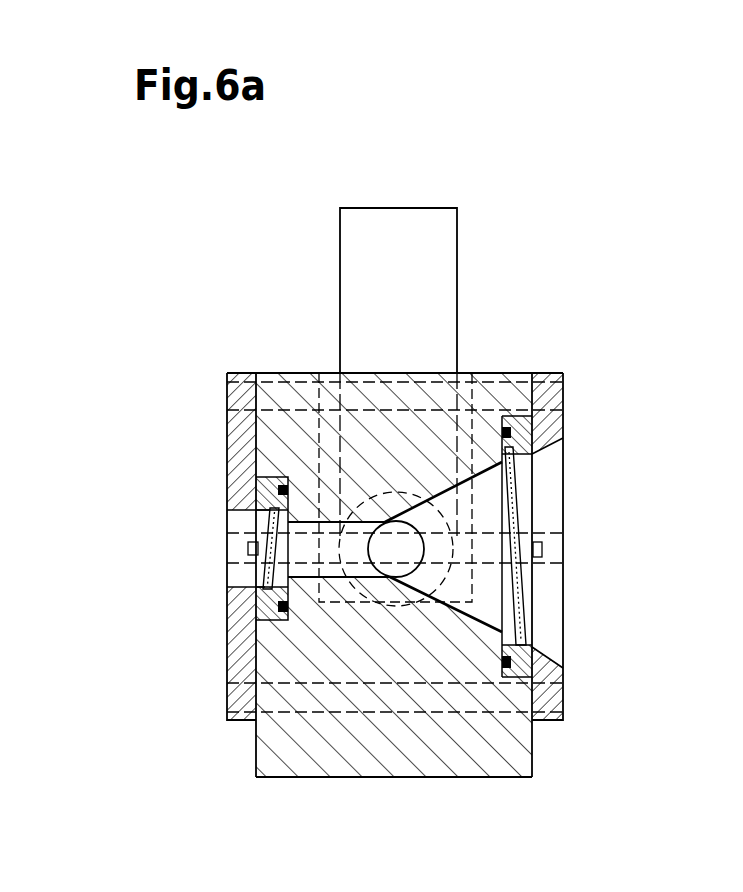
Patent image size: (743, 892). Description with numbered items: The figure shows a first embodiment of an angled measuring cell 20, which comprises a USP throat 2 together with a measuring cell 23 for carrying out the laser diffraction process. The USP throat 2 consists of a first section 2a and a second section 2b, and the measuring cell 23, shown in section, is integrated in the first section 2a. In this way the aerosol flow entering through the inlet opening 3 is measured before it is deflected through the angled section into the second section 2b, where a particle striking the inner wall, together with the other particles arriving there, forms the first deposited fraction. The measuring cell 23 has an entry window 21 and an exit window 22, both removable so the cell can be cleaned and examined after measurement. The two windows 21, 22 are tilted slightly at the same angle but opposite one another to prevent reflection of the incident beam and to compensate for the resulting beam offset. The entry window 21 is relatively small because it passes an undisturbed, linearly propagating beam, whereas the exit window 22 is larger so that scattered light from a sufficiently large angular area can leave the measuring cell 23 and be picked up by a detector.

The USP throat 2 is at (417, 507).
The first section 2a is at (403, 588).
The second section 2b is at (390, 277).
The inlet opening 3 is at (397, 556).
The angled measuring cell 20 is at (542, 290).
The entry window 21 is at (270, 513).
The exit window 22 is at (521, 596).
The measuring cell 23 is at (478, 518).